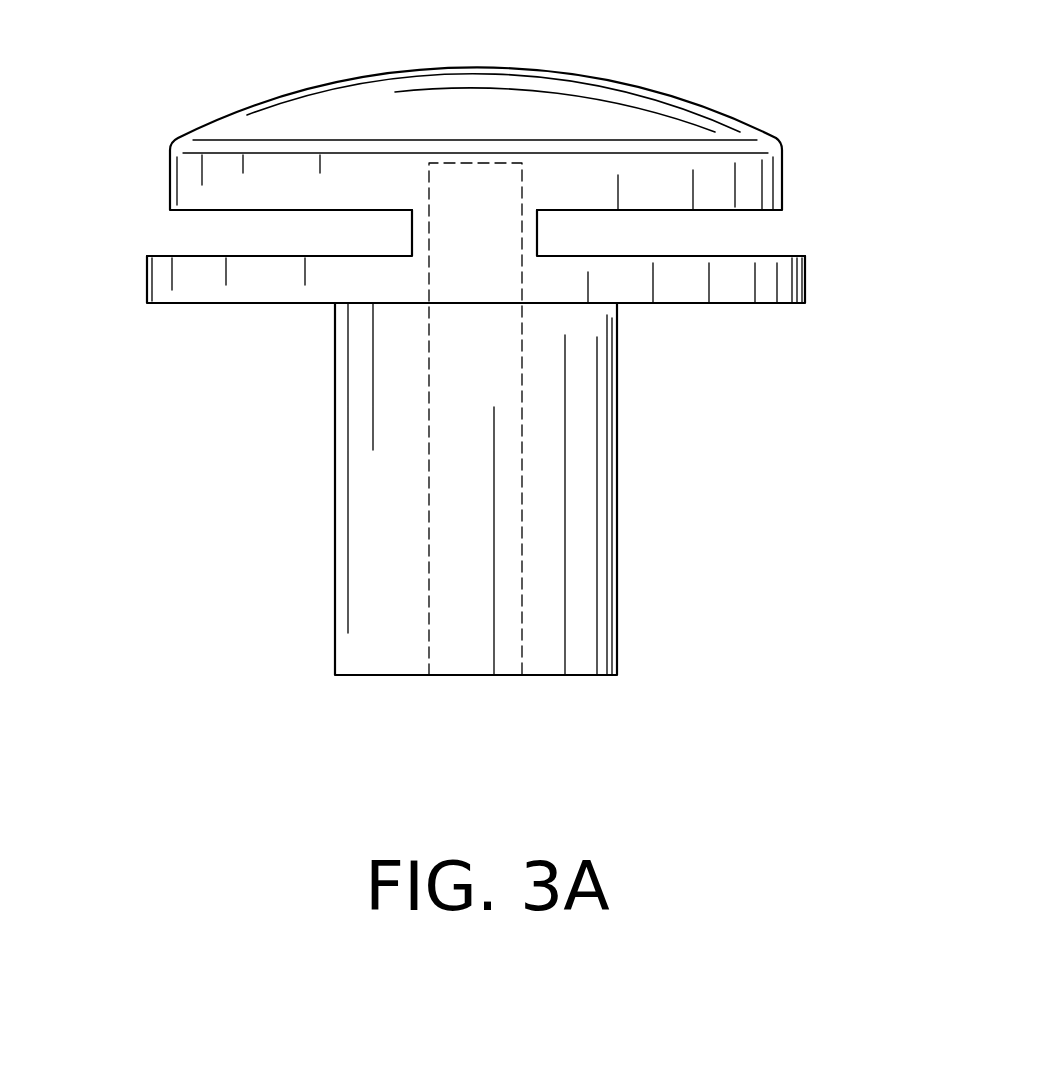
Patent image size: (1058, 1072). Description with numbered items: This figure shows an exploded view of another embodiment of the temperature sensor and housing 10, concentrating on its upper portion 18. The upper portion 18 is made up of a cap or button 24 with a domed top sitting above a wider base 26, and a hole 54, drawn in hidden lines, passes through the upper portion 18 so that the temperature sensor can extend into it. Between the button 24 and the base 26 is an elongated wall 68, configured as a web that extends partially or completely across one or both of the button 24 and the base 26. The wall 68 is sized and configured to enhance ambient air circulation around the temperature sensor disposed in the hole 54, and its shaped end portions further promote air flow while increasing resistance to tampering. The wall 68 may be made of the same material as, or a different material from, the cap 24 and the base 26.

The temperature sensor and housing 10 is at (735, 454).
The upper portion 18 is at (807, 293).
The cap or button 24 is at (338, 115).
The base 26 is at (252, 285).
The hole 54 is at (522, 188).
The elongated wall 68 is at (461, 236).